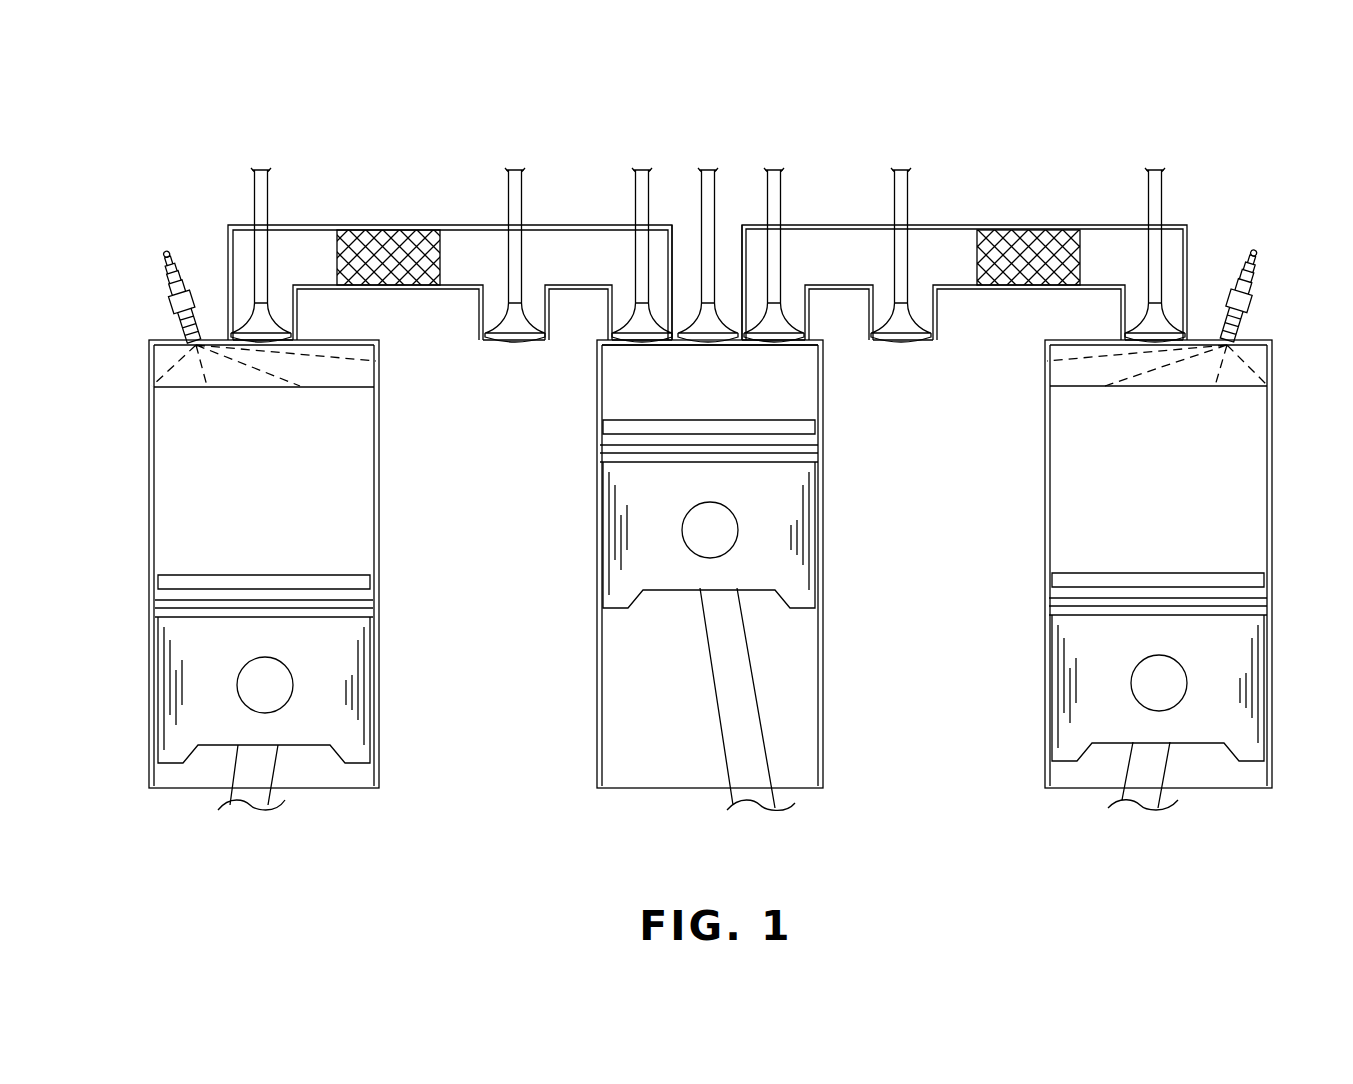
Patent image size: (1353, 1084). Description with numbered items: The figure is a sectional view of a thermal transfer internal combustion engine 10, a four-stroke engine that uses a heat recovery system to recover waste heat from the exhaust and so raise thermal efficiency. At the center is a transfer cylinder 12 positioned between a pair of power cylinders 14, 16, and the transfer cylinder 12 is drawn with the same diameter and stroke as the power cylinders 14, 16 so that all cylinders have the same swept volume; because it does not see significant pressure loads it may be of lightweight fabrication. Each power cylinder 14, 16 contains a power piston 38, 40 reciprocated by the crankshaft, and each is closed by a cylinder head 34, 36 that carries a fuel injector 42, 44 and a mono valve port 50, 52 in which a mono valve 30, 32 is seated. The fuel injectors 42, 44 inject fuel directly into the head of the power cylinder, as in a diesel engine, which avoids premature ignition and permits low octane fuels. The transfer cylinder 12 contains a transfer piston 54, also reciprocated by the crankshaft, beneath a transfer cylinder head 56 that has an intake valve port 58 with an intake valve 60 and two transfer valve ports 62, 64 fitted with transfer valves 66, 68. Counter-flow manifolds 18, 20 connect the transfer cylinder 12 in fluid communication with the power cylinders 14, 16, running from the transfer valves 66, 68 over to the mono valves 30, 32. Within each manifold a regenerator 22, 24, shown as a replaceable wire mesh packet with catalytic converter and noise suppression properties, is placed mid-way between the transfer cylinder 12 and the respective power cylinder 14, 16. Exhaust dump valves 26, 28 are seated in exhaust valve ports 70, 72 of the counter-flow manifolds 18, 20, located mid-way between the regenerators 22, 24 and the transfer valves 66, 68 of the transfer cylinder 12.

The thermal transfer internal combustion engine 10 is at (1256, 150).
The transfer cylinder 12 is at (615, 698).
The power cylinder 14 is at (149, 482).
The power cylinder 16 is at (1045, 480).
The counter-flow manifold 18 is at (557, 225).
The counter-flow manifold 20 is at (947, 225).
The regenerator 22 is at (386, 240).
The regenerator 24 is at (1048, 238).
The exhaust dump valve 26 is at (522, 188).
The exhaust dump valve 28 is at (895, 195).
The mono valve 30 is at (272, 185).
The mono valve 32 is at (1165, 188).
The cylinder head 34 is at (149, 357).
The cylinder head 36 is at (1042, 355).
The power piston 38 is at (187, 700).
The power piston 40 is at (1078, 697).
The fuel injector 42 is at (167, 298).
The fuel injector 44 is at (1255, 292).
The mono valve port 50 is at (297, 337).
The mono valve port 52 is at (1122, 337).
The transfer piston 54 is at (623, 478).
The transfer cylinder head 56 is at (597, 380).
The intake valve port 58 is at (735, 340).
The intake valve 60 is at (716, 185).
The transfer valve port 62 is at (612, 335).
The transfer valve port 64 is at (807, 337).
The transfer valve 66 is at (650, 185).
The transfer valve 68 is at (784, 195).
The exhaust valve port 70 is at (482, 340).
The exhaust valve port 72 is at (873, 340).